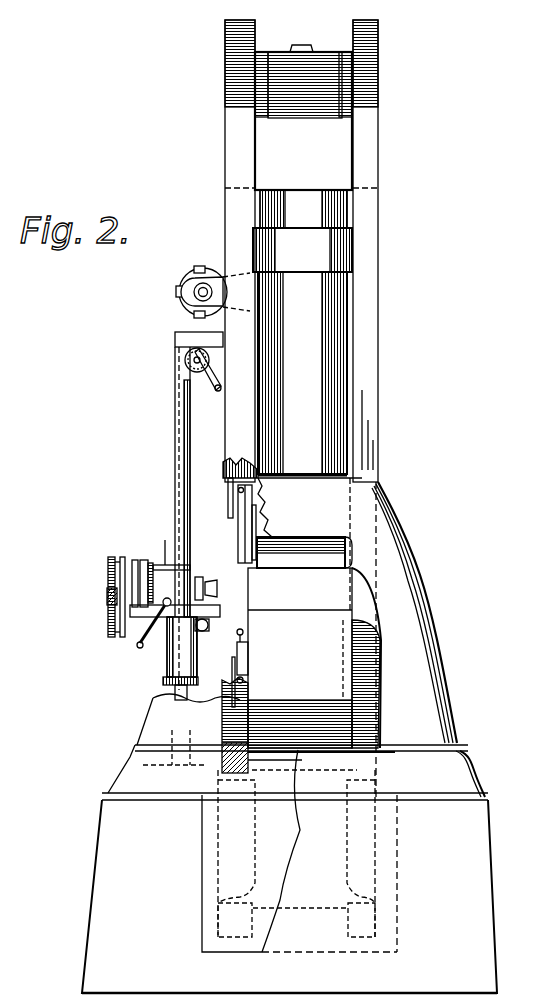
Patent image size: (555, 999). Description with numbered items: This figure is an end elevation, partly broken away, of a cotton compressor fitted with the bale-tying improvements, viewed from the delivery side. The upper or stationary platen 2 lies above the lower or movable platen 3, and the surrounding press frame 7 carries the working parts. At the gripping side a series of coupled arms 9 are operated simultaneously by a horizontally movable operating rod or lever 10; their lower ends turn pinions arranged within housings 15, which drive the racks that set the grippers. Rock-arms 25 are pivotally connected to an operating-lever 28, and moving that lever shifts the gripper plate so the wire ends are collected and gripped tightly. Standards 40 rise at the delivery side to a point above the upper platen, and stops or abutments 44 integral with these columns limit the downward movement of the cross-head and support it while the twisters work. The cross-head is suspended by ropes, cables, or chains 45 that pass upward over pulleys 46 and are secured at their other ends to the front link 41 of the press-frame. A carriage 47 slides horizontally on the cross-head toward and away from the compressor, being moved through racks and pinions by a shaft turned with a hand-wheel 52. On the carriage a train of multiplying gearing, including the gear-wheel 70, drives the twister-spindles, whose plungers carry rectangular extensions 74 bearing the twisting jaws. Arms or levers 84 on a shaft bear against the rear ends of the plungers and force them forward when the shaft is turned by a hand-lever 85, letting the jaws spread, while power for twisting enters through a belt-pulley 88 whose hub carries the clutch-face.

The upper platen 2 is at (265, 512).
The lower platen 3 is at (299, 760).
The frame 7 is at (423, 595).
The arms 9 is at (228, 490).
The operating rod or lever 10 is at (223, 483).
The housings 15 is at (223, 517).
The rock-arms 25 is at (252, 550).
The operating-lever 28 is at (238, 535).
The standards 40 is at (175, 423).
The front link of the press-frame 41 is at (212, 218).
The stops or abutments 44 is at (163, 682).
The ropes, cables, or chains 45 is at (213, 377).
The pulleys 46 is at (188, 348).
The carriage 47 is at (108, 610).
The hand-wheel 52 is at (202, 632).
The gear-wheel 70 is at (193, 563).
The rectangular extension 74 is at (243, 593).
The arms or levers 84 is at (167, 557).
The hand-lever 85 is at (138, 652).
The belt-pulley 88 is at (108, 567).